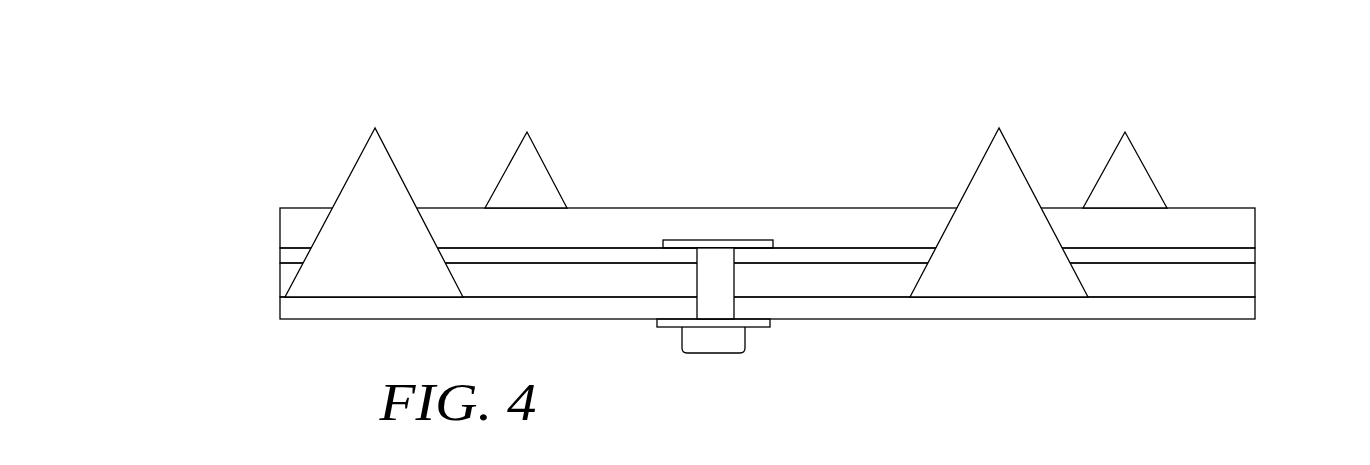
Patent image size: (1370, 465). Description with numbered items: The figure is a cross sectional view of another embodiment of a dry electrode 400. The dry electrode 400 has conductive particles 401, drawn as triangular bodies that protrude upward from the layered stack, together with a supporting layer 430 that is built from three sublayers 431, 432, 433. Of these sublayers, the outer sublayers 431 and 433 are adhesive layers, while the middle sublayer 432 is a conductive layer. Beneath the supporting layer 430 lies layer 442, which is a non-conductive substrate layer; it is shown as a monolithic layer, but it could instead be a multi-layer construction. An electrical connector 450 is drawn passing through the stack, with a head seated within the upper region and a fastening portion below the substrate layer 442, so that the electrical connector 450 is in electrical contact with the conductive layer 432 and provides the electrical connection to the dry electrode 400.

The dry electrode 400 is at (1224, 70).
The conductive particles 401 is at (376, 128).
The supporting layer 430 is at (242, 207).
The adhesive layer 431 is at (1255, 227).
The conductive layer 432 is at (1255, 255).
The adhesive layer 433 is at (1255, 279).
The non-conductive substrate layer 442 is at (1255, 309).
The electrical connector 450 is at (716, 353).